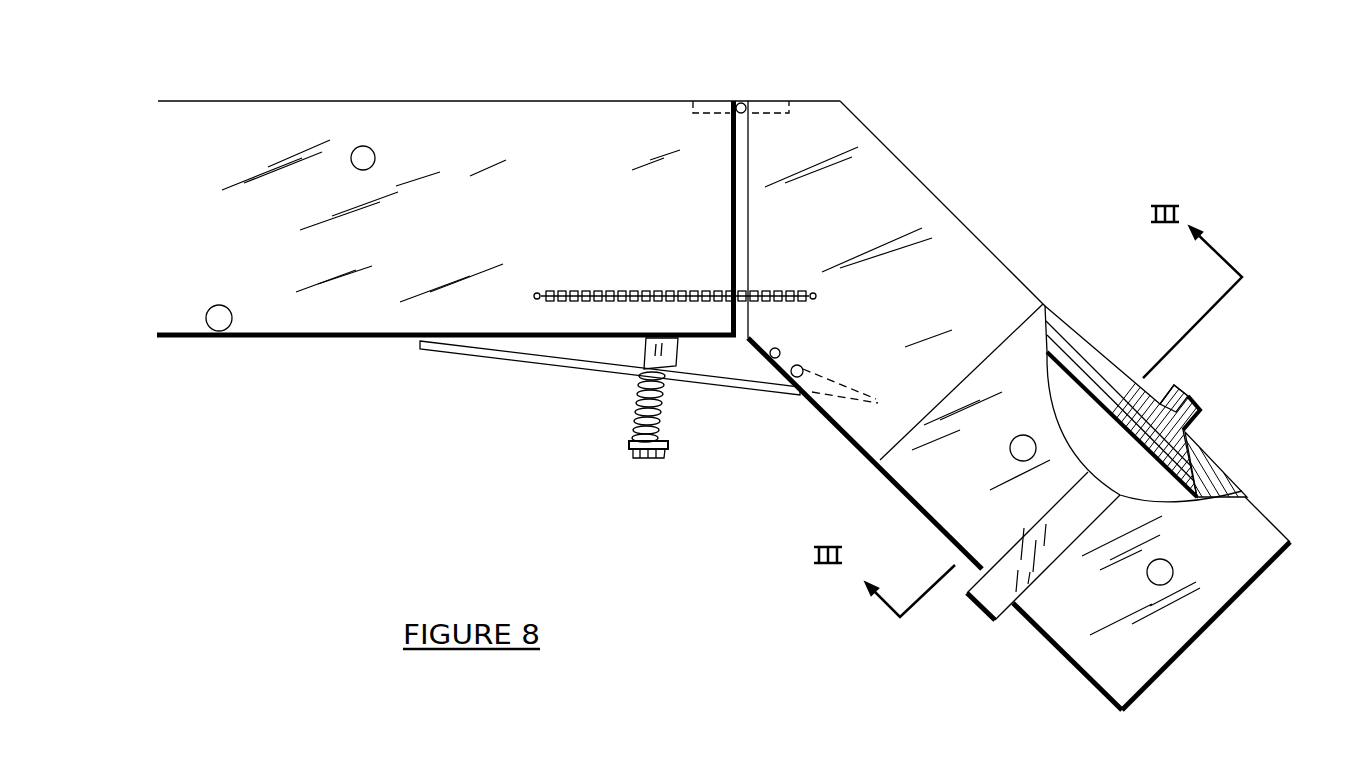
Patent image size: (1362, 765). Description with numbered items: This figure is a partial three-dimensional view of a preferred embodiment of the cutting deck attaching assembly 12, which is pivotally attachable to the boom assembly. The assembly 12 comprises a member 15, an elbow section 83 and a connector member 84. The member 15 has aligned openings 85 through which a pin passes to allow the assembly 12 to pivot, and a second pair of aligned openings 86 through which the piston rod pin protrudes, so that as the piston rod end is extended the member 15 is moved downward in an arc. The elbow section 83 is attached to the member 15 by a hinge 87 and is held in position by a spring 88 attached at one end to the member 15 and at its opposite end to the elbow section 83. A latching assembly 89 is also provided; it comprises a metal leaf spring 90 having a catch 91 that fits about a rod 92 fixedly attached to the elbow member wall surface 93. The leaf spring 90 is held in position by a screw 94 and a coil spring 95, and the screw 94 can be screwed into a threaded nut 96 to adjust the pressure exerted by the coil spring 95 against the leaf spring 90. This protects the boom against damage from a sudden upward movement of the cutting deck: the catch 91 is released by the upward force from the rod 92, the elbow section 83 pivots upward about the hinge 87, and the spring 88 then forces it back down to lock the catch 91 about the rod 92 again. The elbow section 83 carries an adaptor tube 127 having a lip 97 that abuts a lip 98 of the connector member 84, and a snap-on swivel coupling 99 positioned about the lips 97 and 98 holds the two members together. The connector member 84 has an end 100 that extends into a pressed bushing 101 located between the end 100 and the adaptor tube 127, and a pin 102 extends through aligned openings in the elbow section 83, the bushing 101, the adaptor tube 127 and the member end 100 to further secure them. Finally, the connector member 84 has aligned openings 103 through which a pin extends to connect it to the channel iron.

The cutting deck attaching assembly 12 is at (968, 161).
The member 15 is at (500, 101).
The elbow section 83 is at (1052, 312).
The connector member 84 is at (1265, 520).
The aligned openings 85 is at (222, 316).
The second pair of aligned openings 86 is at (366, 157).
The hinge 87 is at (741, 103).
The spring 88 is at (607, 291).
The latching assembly 89 is at (588, 400).
The metal leaf spring 90 is at (489, 378).
The catch 91 is at (845, 389).
The rod 92 is at (808, 348).
The elbow member wall surface 93 is at (771, 354).
The screw 94 is at (632, 452).
The coil spring 95 is at (659, 404).
The threaded nut 96 is at (669, 346).
The lip 97 is at (1178, 396).
The lip 98 is at (1197, 406).
The snap-on swivel coupling 99 is at (1190, 420).
The end 100 is at (1109, 393).
The pressed bushing 101 is at (1065, 345).
The pin 102 is at (1018, 456).
The aligned openings 103 is at (1162, 560).
The adaptor tube 127 is at (1136, 352).